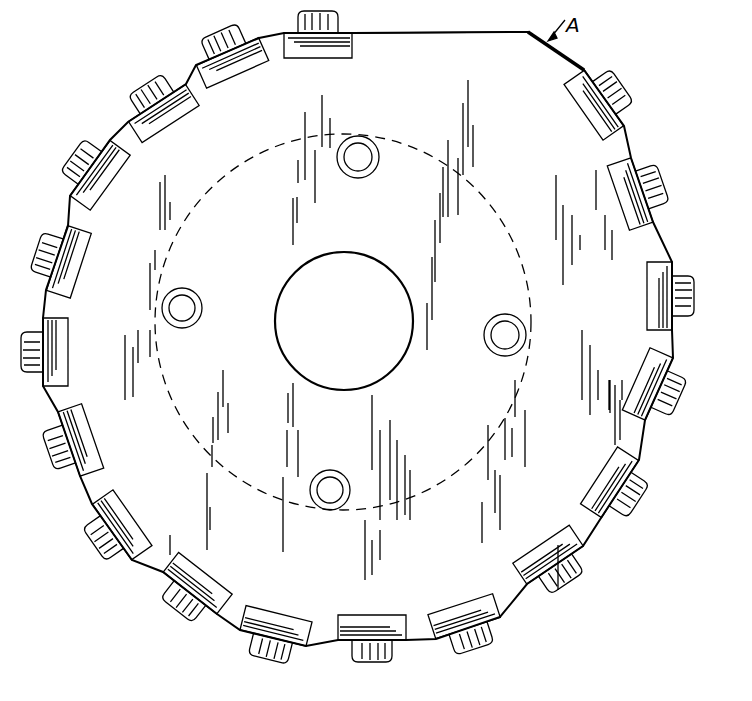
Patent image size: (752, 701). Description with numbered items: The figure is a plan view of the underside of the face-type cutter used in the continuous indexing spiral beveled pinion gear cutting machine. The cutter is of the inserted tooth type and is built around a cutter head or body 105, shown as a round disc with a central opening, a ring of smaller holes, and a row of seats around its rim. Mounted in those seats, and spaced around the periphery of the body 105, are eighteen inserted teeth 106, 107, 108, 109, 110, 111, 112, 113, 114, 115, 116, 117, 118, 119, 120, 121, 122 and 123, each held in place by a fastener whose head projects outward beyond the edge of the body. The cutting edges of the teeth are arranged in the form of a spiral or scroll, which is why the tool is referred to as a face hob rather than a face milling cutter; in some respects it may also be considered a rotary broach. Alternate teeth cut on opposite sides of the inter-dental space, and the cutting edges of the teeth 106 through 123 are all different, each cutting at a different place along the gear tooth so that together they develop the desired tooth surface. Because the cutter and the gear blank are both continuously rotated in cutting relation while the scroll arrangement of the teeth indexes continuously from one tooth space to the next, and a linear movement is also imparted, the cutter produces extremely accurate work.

The cutter head or body 105 is at (468, 43).
The inserted tooth 106 is at (300, 53).
The inserted tooth 107 is at (233, 72).
The inserted tooth 108 is at (166, 125).
The inserted tooth 109 is at (103, 183).
The inserted tooth 110 is at (80, 262).
The inserted tooth 111 is at (70, 368).
The inserted tooth 112 is at (95, 448).
The inserted tooth 113 is at (135, 510).
The inserted tooth 114 is at (198, 578).
The inserted tooth 115 is at (277, 614).
The inserted tooth 116 is at (374, 614).
The inserted tooth 117 is at (477, 577).
The inserted tooth 118 is at (545, 529).
The inserted tooth 119 is at (588, 493).
The inserted tooth 120 is at (630, 408).
The inserted tooth 121 is at (652, 288).
The inserted tooth 122 is at (634, 218).
The inserted tooth 123 is at (586, 112).